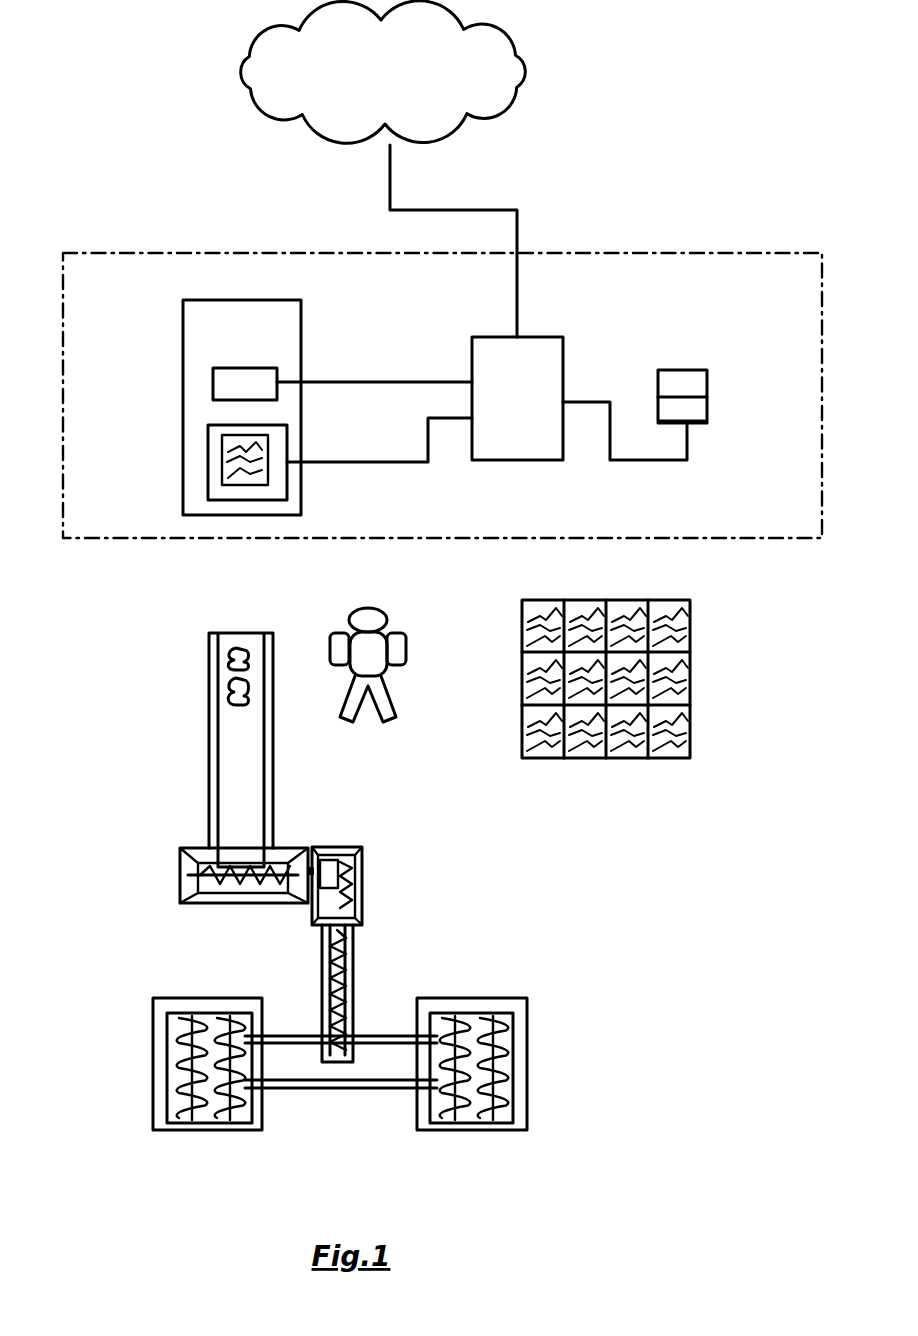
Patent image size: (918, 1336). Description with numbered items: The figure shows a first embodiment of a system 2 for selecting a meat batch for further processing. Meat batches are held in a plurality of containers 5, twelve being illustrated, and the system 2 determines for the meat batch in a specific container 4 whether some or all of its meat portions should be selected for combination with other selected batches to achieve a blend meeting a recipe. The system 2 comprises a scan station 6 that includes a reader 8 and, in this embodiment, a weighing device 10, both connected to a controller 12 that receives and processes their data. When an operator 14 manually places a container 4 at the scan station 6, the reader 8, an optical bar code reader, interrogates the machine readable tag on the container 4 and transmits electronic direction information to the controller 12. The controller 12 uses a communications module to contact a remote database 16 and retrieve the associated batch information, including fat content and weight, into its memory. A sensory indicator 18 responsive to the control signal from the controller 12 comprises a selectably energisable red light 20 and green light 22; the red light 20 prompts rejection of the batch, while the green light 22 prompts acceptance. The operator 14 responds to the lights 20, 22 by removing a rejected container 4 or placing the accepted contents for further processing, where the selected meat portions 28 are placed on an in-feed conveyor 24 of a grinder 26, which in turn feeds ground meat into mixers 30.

The system 2 is at (70, 222).
The container 4 is at (224, 452).
The plurality of containers 5 is at (690, 582).
The scan station 6 is at (183, 337).
The reader 8 is at (244, 368).
The weighing device 10 is at (261, 470).
The controller 12 is at (517, 398).
The operator 14 is at (383, 604).
The database 16 is at (383, 72).
The sensory indicator 18 is at (732, 398).
The red light 20 is at (680, 370).
The green light 22 is at (698, 426).
The in-feed conveyor 24 is at (185, 744).
The grinder 26 is at (180, 897).
The selected meat portions 28 is at (230, 695).
The mixers 30 is at (153, 1050).